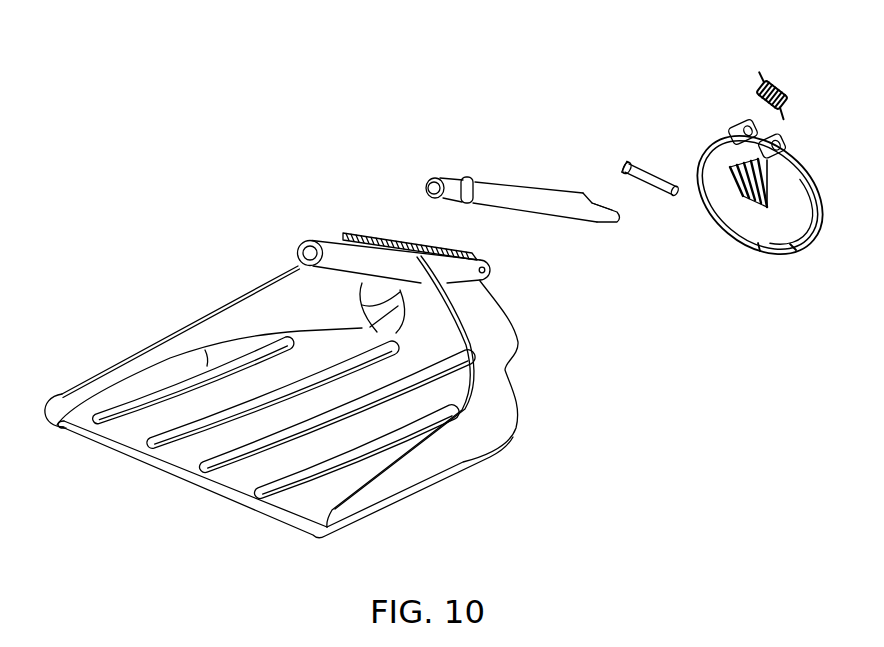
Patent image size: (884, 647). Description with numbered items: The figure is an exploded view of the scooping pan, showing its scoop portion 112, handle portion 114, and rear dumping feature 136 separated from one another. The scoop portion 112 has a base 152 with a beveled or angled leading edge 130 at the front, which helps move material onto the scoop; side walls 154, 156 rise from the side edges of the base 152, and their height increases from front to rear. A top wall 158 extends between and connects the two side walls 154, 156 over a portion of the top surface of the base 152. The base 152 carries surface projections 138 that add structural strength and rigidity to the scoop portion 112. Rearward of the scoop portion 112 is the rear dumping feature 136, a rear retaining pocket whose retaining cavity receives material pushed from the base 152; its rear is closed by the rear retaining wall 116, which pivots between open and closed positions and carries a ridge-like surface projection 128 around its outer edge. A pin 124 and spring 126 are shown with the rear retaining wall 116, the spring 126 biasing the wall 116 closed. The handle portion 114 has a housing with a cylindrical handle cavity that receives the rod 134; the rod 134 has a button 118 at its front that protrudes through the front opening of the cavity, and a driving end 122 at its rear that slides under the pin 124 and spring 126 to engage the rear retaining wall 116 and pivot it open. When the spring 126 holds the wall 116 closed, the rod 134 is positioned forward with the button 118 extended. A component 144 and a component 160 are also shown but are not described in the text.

The scoop portion 112 is at (88, 373).
The handle portion 114 is at (311, 237).
The rear retaining wall 116 is at (813, 247).
The button 118 is at (440, 178).
The driving end 122 is at (611, 225).
The pin 124 is at (628, 163).
The spring 126 is at (777, 88).
The surface projection 128 is at (787, 257).
The leading edge 130 is at (100, 448).
The rod 134 is at (522, 186).
The rear dumping feature 136 is at (515, 365).
The surface projection 138 is at (260, 493).
The arm 144 is at (492, 279).
The base 152 is at (222, 477).
The side wall 154 is at (440, 453).
The side wall 156 is at (222, 333).
The top wall 158 is at (362, 234).
The fins 160 is at (753, 200).